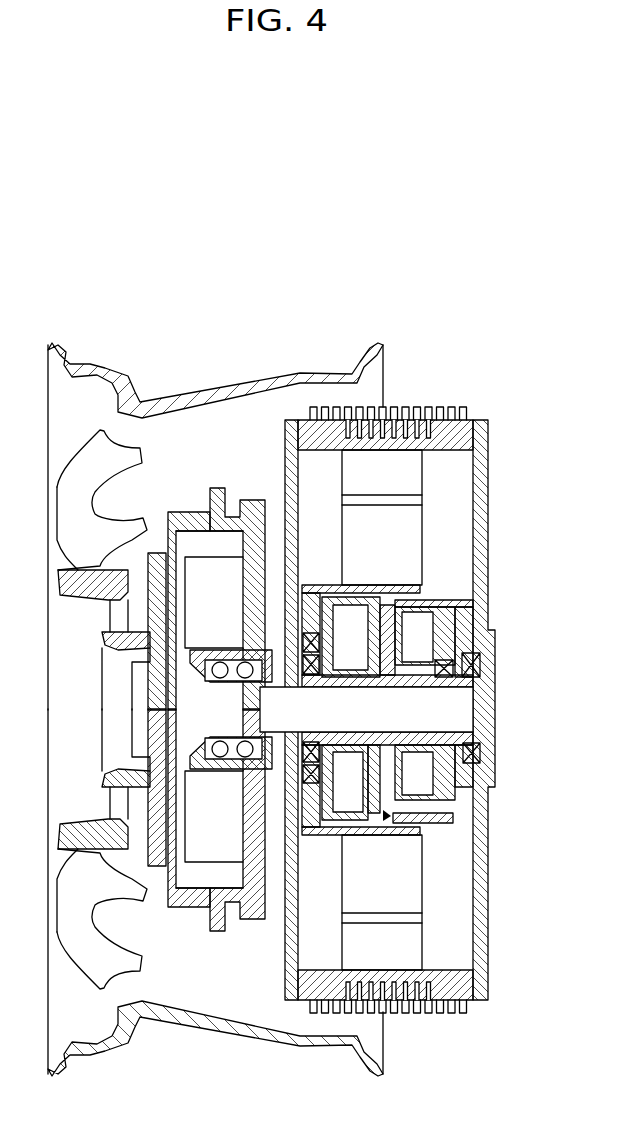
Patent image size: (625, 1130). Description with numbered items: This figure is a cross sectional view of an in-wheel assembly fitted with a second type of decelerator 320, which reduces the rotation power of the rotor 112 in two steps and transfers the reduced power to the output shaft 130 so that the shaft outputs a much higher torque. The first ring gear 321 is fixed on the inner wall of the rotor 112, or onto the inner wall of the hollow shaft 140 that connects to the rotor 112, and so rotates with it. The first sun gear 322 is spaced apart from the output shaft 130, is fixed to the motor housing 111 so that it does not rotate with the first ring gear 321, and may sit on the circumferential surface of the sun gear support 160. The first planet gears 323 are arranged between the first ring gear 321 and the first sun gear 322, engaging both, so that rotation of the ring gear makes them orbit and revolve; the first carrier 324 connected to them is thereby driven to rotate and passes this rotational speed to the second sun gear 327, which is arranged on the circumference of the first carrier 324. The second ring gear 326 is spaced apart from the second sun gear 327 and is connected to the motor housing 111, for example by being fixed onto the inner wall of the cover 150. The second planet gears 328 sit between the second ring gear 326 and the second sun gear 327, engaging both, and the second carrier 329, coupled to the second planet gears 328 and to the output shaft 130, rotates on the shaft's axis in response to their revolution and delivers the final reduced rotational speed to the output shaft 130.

The motor housing 111 is at (490, 450).
The rotor 112 is at (413, 515).
The hollow shaft 140 is at (355, 584).
The first ring gear 321 is at (357, 617).
The first planet gears 323 is at (380, 630).
The cover 150 is at (496, 652).
The first carrier 324 is at (417, 688).
The first sun gear 322 is at (357, 688).
The output shaft 130 is at (470, 722).
The second sun gear 327 is at (481, 752).
The second planet gears 328 is at (423, 770).
The second carrier 329 is at (457, 790).
The second ring gear 326 is at (440, 812).
The decelerator 320 is at (392, 817).
The sun gear support 160 is at (333, 832).